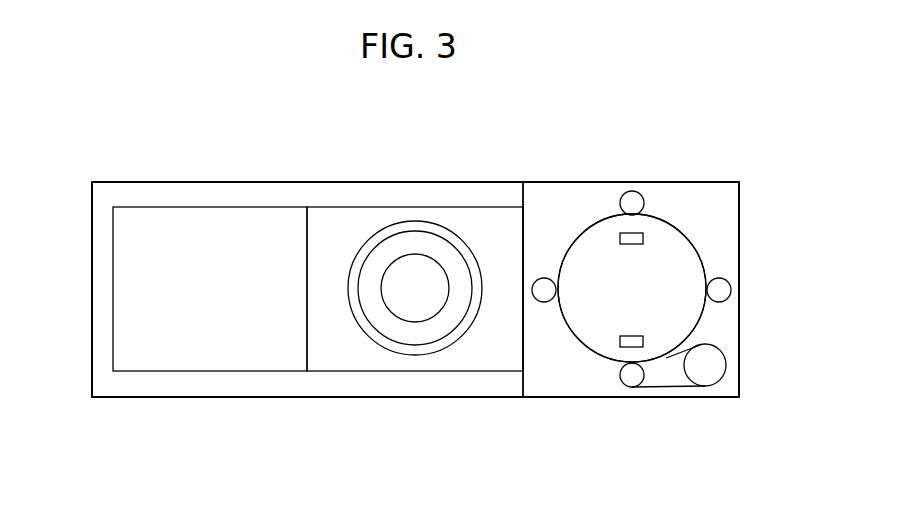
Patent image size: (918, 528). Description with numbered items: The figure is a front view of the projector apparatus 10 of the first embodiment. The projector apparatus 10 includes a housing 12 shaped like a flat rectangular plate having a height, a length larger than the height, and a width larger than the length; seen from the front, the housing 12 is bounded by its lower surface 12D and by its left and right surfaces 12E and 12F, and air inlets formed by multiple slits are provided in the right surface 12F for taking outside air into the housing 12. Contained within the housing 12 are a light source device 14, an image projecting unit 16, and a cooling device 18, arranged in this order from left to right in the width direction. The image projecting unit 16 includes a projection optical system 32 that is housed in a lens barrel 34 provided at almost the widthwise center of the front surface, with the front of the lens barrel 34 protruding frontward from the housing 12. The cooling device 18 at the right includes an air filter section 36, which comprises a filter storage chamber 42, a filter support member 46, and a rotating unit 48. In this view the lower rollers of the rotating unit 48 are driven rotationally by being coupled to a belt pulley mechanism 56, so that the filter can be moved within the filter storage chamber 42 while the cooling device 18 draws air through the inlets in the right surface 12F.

The projector apparatus 10 is at (283, 140).
The housing 12 is at (480, 158).
The lower surface 12D is at (312, 398).
The left surface 12E is at (90, 362).
The right surface 12F is at (740, 327).
The light source device 14 is at (207, 207).
The image projecting unit 16 is at (355, 207).
The cooling device 18 is at (635, 155).
The projection optical system 32 is at (403, 297).
The lens barrel 34 is at (429, 350).
The air filter section 36 is at (694, 212).
The filter storage chamber 42 is at (728, 252).
The filter support member 46 is at (693, 245).
The rotating unit 48 is at (579, 378).
The belt pulley mechanism 56 is at (677, 402).